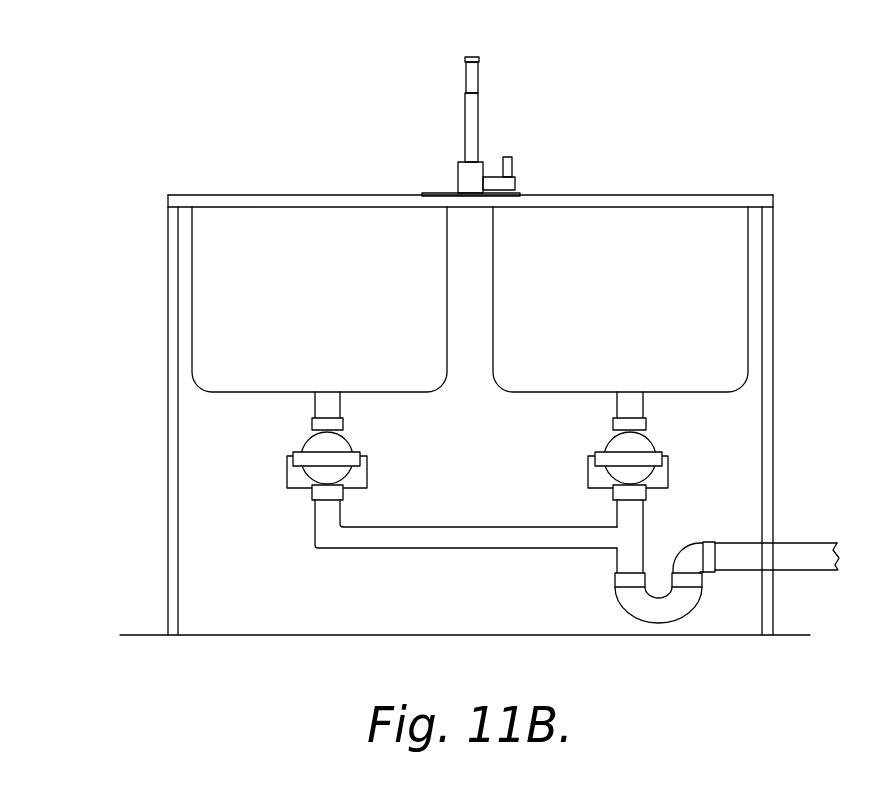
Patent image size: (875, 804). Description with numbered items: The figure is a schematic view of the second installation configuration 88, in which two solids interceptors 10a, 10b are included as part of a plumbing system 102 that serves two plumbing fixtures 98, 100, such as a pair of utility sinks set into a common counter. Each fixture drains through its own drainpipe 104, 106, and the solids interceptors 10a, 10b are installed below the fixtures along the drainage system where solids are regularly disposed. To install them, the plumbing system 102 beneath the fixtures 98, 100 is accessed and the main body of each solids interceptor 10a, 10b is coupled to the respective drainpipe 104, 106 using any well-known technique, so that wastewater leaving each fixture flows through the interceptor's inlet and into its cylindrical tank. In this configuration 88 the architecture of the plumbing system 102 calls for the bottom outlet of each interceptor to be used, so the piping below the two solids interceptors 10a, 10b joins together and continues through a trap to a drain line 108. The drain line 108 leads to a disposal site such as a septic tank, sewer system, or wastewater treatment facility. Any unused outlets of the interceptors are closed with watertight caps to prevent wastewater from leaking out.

The second installation configuration 88 is at (326, 82).
The plumbing fixture 98 is at (210, 273).
The plumbing fixture 100 is at (730, 293).
The drainpipe 104 is at (313, 405).
The drainpipe 106 is at (625, 404).
The solids interceptor 10a is at (303, 473).
The solids interceptor 10b is at (650, 472).
The plumbing system 102 is at (360, 540).
The drain line 108 is at (742, 558).